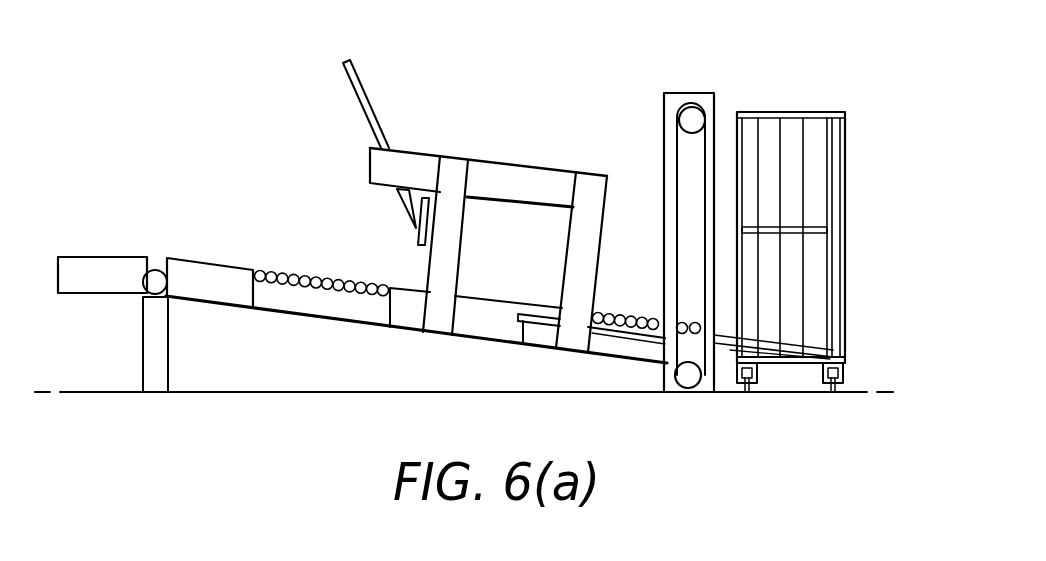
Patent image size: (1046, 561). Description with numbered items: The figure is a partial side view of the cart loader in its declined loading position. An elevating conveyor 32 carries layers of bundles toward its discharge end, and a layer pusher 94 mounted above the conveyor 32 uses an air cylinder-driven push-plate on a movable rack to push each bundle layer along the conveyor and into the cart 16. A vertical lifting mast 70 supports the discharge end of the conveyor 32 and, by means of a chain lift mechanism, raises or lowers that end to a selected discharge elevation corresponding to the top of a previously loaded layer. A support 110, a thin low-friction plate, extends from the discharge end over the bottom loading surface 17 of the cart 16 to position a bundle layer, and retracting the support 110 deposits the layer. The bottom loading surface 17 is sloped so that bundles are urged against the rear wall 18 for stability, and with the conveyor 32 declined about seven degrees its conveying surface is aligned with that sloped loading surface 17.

The elevating conveyor 32 is at (339, 333).
The layer pusher 94 is at (500, 150).
The vertical lifting mast 70 is at (682, 92).
The cart 16 is at (812, 252).
The rear wall 18 is at (848, 211).
The support 110 is at (813, 348).
The bottom loading surface 17 is at (781, 365).